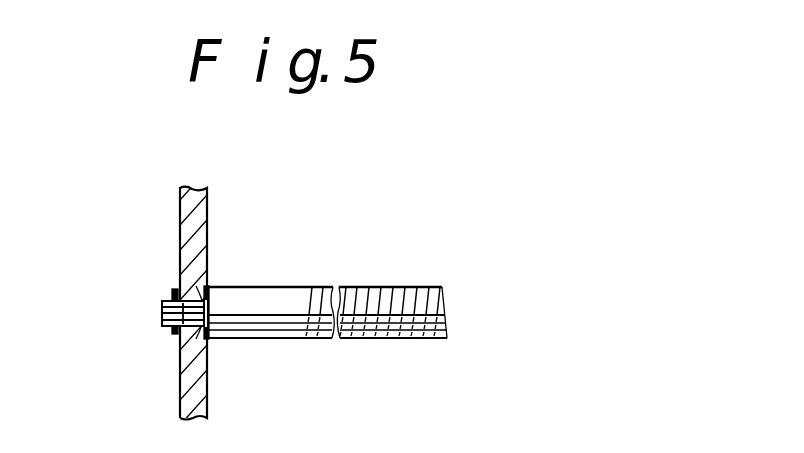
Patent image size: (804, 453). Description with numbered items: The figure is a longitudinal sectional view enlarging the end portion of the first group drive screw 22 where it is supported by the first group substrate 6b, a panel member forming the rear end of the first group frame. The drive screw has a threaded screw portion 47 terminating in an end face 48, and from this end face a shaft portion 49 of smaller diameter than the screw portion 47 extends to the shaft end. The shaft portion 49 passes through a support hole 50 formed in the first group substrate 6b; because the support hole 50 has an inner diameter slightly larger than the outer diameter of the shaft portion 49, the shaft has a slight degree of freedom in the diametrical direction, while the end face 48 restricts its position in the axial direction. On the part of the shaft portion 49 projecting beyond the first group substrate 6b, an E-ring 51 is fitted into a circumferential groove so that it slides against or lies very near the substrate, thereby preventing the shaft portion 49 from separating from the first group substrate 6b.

The first group substrate 6b is at (208, 225).
The first group drive screw 22 is at (325, 301).
The screw portion 47 is at (368, 340).
The end face 48 is at (204, 285).
The shaft portion 49 is at (183, 338).
The support hole 50 is at (180, 300).
The E-ring 51 is at (172, 290).